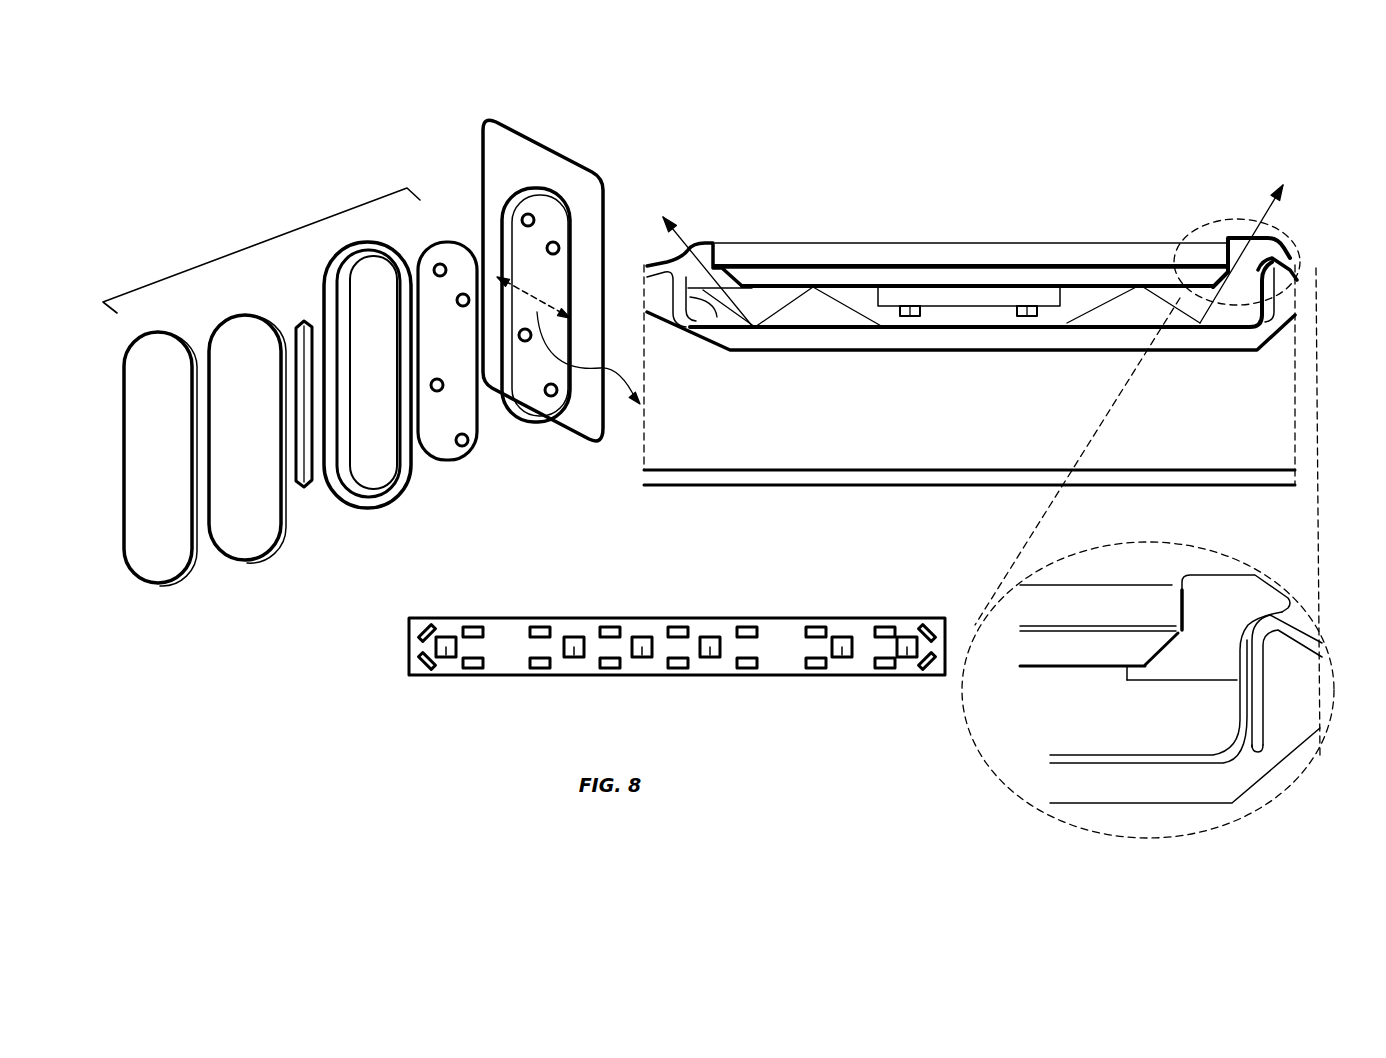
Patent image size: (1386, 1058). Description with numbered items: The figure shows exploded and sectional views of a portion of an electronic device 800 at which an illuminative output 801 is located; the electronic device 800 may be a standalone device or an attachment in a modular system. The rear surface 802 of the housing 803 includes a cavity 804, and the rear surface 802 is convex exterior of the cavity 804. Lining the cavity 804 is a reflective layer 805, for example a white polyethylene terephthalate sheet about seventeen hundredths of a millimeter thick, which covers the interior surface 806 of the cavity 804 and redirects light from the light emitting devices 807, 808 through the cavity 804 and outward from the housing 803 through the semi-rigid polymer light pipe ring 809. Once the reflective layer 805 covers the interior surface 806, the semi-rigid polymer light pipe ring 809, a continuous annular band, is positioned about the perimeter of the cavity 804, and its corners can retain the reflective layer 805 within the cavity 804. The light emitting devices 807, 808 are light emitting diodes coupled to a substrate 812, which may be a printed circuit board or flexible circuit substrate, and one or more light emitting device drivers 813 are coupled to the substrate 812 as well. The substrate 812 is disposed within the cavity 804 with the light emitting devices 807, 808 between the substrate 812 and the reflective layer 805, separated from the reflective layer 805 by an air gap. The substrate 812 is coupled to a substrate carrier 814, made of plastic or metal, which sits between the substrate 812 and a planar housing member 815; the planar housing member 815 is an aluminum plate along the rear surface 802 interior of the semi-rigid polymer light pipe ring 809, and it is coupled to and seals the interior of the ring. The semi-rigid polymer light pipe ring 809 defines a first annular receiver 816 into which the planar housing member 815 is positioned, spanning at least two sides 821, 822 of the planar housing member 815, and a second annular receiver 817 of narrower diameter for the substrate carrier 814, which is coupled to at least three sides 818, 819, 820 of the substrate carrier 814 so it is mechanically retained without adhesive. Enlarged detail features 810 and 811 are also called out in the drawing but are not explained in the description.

The electronic device 800 is at (335, 176).
The illuminative output 801 is at (205, 265).
The rear surface 802 is at (512, 160).
The housing 803 is at (574, 162).
The cavity 804 is at (827, 313).
The reflective layer 805 is at (467, 412).
The interior surface 806 is at (524, 283).
The light emitting device 807 is at (545, 628).
The light emitting device 808 is at (683, 668).
The semi-rigid polymer light pipe ring 809 is at (405, 468).
The housing hook 810 is at (1272, 287).
The frame member 811 is at (713, 305).
The substrate 812 is at (302, 325).
The light emitting device driver 813 is at (447, 653).
The substrate carrier 814 is at (238, 527).
The planar housing member 815 is at (152, 558).
The first annular receiver 816 is at (1222, 248).
The second annular receiver 817 is at (1293, 268).
The side of substrate carrier 818 is at (1180, 632).
The side of substrate carrier 819 is at (1165, 648).
The side of substrate carrier 820 is at (1113, 668).
The side of planar housing member 821 is at (1187, 602).
The side of planar housing member 822 is at (1183, 597).